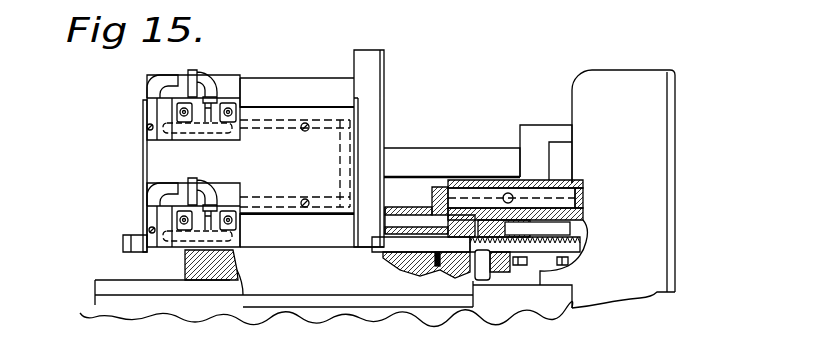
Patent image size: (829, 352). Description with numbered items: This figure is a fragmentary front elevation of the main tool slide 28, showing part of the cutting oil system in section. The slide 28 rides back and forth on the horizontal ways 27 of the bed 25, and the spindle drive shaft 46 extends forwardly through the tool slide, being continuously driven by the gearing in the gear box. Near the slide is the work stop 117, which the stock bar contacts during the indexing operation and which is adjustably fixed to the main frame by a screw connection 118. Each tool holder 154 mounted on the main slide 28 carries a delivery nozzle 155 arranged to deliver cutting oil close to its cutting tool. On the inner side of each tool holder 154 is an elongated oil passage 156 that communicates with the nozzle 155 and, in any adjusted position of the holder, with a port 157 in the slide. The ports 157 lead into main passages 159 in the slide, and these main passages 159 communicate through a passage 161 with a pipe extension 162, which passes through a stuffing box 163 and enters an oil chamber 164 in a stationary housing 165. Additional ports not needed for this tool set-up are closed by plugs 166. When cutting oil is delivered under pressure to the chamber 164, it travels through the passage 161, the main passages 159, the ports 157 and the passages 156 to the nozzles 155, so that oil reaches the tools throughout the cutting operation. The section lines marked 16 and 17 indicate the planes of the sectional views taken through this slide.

The section line 16- 16 is at (140, 128).
The section line 17- 17 is at (388, 197).
The bed 25 is at (148, 312).
The horizontal ways 27 is at (100, 285).
The main tool slide 28 is at (298, 77).
The spindle drive shaft 46 is at (497, 155).
The work stop 117 is at (122, 245).
The screw connection 118 is at (545, 245).
The tool holder 154 is at (220, 88).
The delivery nozzle 155 is at (158, 77).
The elongated oil passage 156 is at (148, 105).
The port 157 is at (195, 141).
The main passage 159 is at (277, 118).
The passage 161 is at (440, 205).
The pipe extension 162 is at (565, 176).
The stuffing box 163 is at (480, 188).
The oil chamber 164 is at (583, 190).
The stationary housing 165 is at (562, 222).
The plug 166 is at (304, 132).